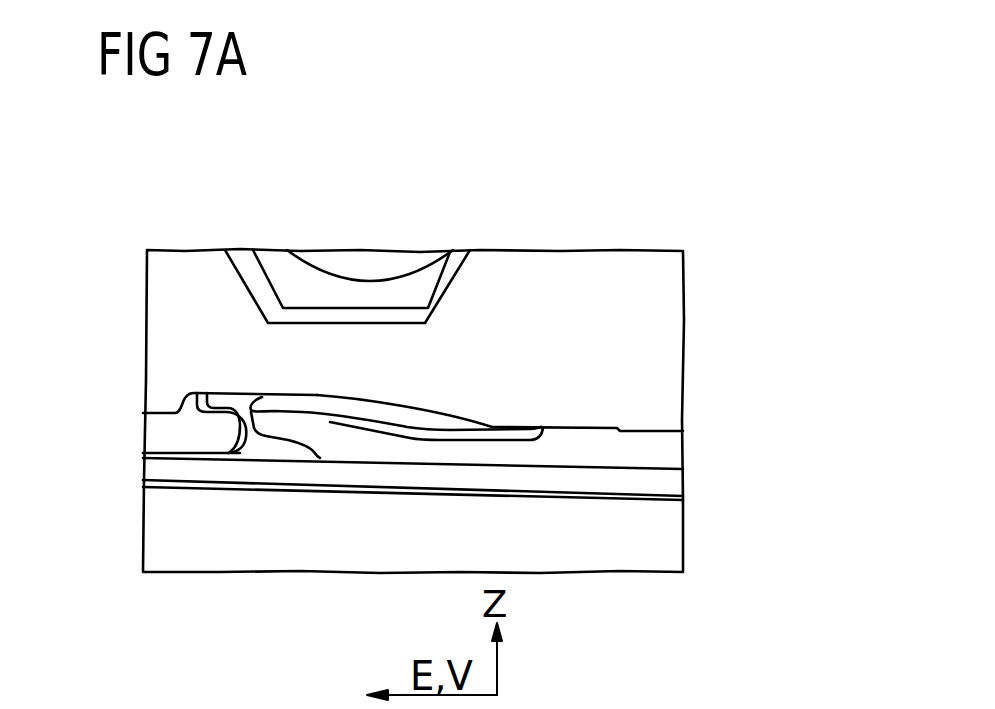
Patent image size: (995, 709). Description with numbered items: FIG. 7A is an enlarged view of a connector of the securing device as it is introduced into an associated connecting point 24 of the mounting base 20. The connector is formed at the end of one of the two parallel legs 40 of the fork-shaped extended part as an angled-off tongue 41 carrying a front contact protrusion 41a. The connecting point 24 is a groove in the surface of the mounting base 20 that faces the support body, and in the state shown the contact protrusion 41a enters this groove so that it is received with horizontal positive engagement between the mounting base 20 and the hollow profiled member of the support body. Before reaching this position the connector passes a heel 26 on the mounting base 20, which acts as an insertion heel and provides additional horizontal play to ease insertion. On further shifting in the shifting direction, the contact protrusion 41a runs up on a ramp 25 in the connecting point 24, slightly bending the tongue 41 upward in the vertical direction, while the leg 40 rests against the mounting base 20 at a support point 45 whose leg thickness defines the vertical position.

The mounting base 20 is at (158, 330).
The connecting point 24 is at (222, 395).
The ramp 25 is at (225, 423).
The heel 26 is at (292, 403).
The leg 40 is at (518, 452).
The tongue 41 is at (297, 423).
The contact protrusion 41a is at (262, 410).
The support point 45 is at (597, 430).